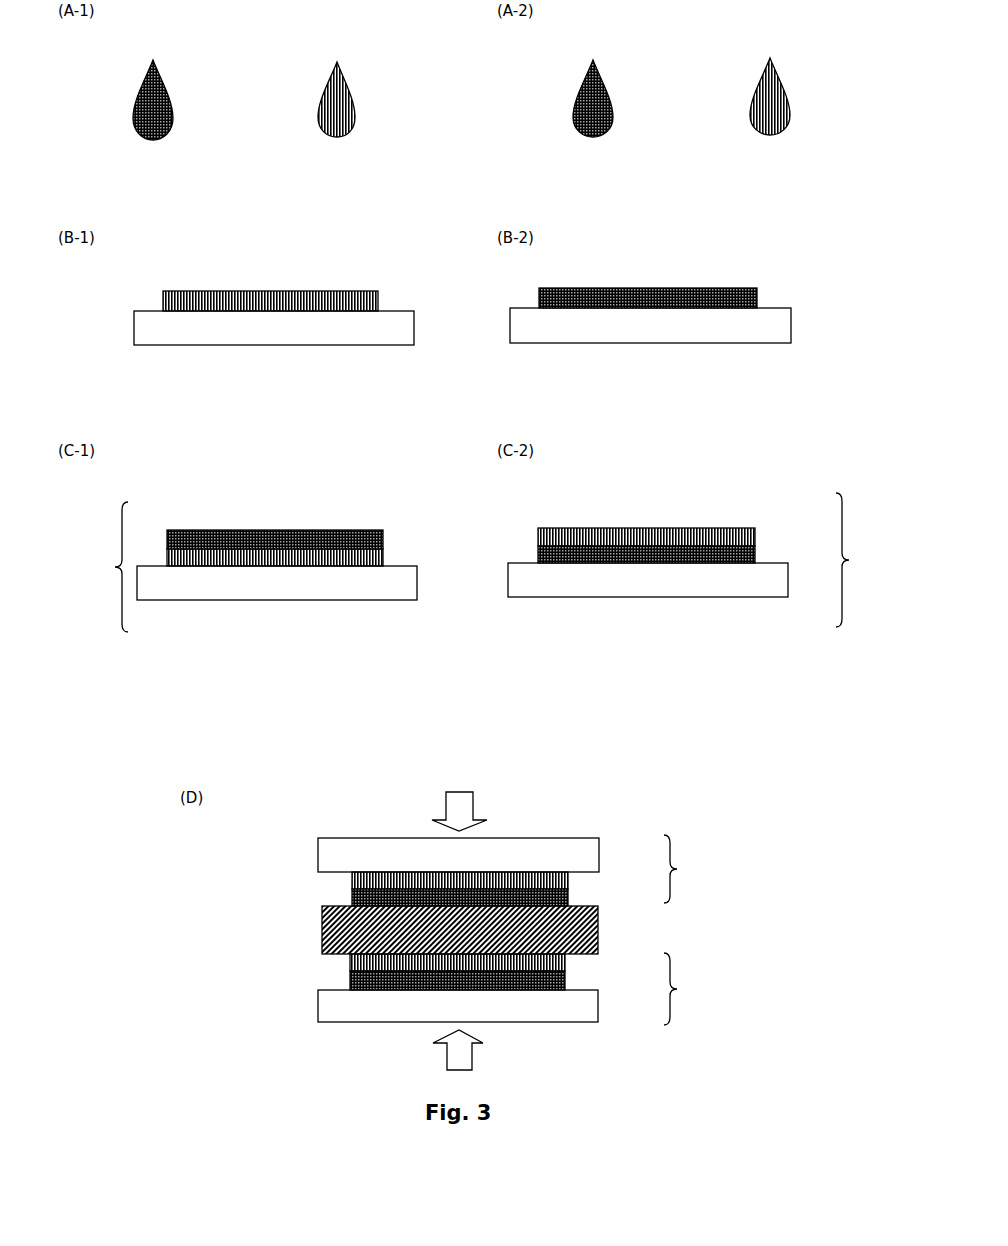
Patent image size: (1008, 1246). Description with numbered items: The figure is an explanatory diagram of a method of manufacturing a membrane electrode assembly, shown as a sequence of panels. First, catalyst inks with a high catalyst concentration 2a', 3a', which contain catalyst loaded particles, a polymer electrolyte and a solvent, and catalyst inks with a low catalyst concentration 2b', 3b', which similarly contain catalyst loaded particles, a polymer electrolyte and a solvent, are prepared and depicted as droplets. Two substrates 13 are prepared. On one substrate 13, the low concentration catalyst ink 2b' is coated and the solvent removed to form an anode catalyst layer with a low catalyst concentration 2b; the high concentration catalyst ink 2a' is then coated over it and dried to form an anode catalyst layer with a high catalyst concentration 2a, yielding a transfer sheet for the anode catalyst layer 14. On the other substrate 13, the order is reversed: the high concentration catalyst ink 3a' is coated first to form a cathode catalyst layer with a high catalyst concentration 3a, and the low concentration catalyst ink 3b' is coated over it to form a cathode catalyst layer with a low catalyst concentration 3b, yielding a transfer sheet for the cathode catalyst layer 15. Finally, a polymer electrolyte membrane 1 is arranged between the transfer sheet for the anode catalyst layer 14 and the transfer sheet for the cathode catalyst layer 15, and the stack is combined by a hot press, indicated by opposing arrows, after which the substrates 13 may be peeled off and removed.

The polymer electrolyte membrane 1 is at (550, 930).
The catalyst rich region of anode catalyst layer 2a is at (400, 718).
The catalyst poor region of anode catalyst layer 2b is at (398, 587).
The catalyst rich region of cathode catalyst layer 3a is at (587, 637).
The catalyst poor region of cathode catalyst layer 3b is at (587, 748).
The catalyst ink with higher catalyst concentration 2a' is at (186, 100).
The catalyst ink with lower catalyst concentration 2b' is at (371, 99).
The catalyst ink with higher catalyst concentration 3a' is at (626, 98).
The catalyst ink with lower catalyst concentration 3b' is at (801, 96).
The substrate 13 is at (365, 332).
The transfer sheet for anode catalyst layer 14 is at (395, 702).
The transfer sheet for cathode catalyst layer 15 is at (773, 759).